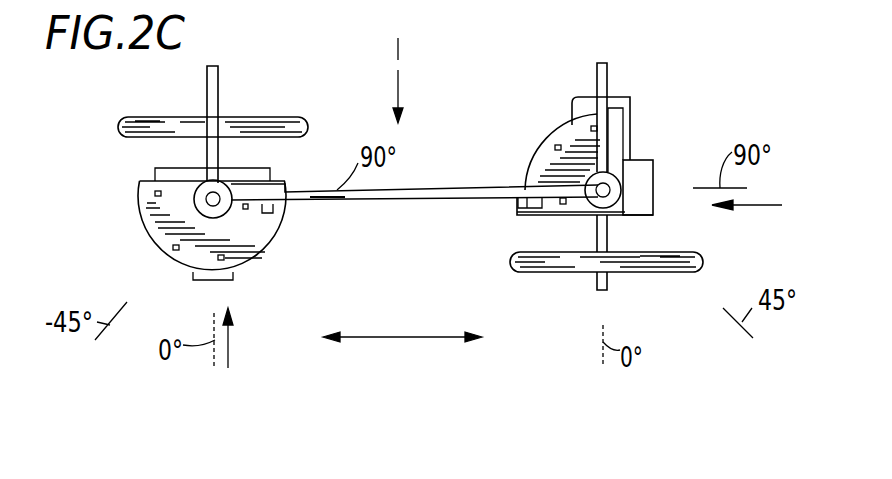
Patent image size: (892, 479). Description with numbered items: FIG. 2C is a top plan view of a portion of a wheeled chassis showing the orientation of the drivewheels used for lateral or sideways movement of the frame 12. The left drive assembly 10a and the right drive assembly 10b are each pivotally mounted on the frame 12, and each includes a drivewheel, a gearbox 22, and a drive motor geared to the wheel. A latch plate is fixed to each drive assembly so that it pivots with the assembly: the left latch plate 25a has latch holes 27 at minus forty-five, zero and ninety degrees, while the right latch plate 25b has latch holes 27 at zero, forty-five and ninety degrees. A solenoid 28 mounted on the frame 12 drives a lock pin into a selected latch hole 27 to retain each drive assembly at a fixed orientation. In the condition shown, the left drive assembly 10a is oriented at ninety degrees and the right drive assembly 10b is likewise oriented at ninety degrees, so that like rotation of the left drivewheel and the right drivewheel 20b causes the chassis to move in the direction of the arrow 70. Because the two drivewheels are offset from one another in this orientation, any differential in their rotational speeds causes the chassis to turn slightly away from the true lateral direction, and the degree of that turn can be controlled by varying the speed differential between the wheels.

The frame 12 is at (607, 84).
The right drivewheel 20b is at (662, 263).
The gearbox 22 is at (640, 182).
The left latch plate 25a is at (263, 233).
The right latch plate 25b is at (533, 166).
The latch holes 27 is at (155, 193).
The solenoid 28 is at (273, 210).
The arrow 70 is at (402, 353).
The left drive assembly 10a is at (221, 359).
The right drive assembly 10b is at (764, 207).